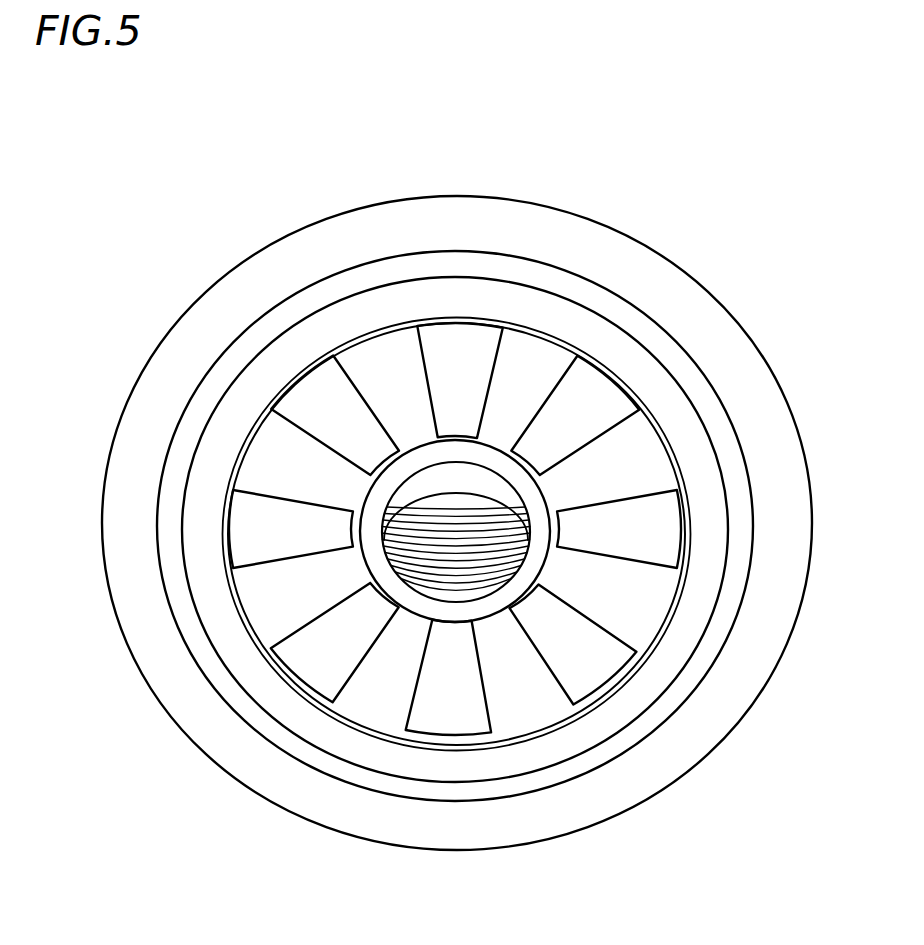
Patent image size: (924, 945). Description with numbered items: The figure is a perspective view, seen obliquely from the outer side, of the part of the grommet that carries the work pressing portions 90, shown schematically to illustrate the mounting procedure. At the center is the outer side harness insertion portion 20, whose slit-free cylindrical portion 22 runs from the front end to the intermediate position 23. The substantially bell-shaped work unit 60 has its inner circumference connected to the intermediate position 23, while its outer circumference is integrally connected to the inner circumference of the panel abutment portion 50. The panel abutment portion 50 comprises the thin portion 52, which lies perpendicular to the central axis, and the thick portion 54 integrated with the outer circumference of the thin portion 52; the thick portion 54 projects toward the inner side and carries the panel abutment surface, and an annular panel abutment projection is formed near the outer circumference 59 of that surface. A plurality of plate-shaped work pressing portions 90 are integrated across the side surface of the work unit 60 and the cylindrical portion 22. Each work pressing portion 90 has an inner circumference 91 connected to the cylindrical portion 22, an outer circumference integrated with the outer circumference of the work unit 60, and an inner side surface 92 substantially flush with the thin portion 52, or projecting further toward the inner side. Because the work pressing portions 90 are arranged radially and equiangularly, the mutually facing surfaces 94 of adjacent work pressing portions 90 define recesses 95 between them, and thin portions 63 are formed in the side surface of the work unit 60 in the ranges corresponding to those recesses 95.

The outer side harness insertion portion 20 is at (418, 355).
The cylindrical portion 22 is at (422, 487).
The intermediate position 23 is at (477, 520).
The panel abutment portion 50 is at (457, 496).
The thin portion 52 is at (455, 487).
The thick portion 54 is at (708, 333).
The outer circumference 59 is at (748, 332).
The work unit 60 is at (383, 435).
The thin portion 63 is at (538, 372).
The work pressing portion 90 is at (356, 478).
The inner circumference 91 is at (302, 393).
The inner side surface 92 is at (272, 428).
The facing surface 94 is at (302, 433).
The recess 95 is at (278, 467).